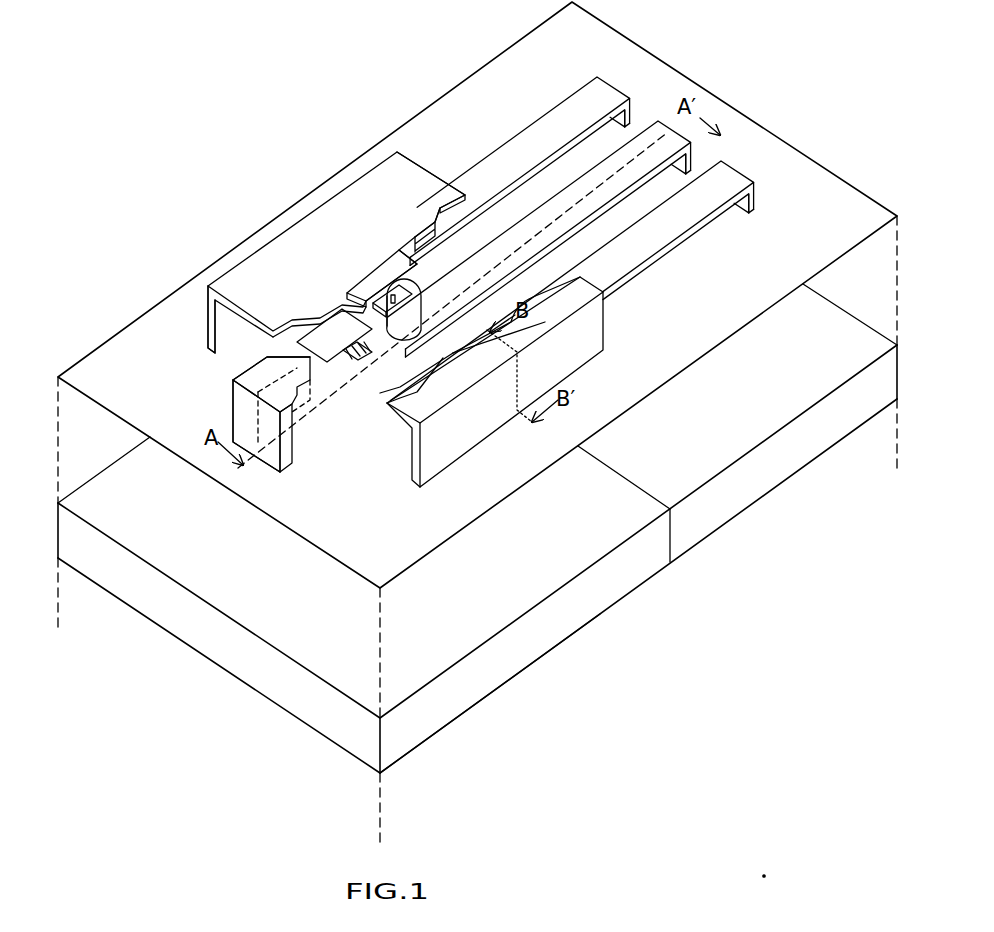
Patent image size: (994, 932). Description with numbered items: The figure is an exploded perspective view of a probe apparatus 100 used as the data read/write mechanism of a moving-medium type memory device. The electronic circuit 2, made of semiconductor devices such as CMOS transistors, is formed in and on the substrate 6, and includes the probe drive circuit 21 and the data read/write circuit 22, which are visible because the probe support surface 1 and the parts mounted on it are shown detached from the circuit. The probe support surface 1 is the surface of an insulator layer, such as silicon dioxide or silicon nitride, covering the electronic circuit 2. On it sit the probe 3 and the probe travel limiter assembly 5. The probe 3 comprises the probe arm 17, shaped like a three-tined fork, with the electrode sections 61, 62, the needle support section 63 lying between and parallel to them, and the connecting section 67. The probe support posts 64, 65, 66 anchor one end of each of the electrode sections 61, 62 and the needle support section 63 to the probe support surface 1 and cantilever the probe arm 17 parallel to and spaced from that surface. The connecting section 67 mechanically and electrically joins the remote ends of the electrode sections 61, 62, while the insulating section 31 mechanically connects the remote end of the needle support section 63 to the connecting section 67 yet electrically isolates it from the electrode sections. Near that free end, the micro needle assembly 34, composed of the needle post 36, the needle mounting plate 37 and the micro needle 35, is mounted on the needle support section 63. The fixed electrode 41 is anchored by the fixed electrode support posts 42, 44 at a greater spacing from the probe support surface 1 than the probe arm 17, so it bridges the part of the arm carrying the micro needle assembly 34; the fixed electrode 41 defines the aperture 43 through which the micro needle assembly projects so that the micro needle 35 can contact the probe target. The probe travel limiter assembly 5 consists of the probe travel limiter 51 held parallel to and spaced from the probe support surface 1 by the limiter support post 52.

The probe apparatus 100 is at (441, 80).
The probe support surface 1 is at (96, 356).
The electronic circuit 2 is at (296, 700).
The probe drive circuit 21 is at (565, 625).
The data read/write circuit 22 is at (770, 475).
The probe 3 is at (527, 110).
The probe travel limiter assembly 5 is at (243, 419).
The probe travel limiter 51 is at (250, 377).
The limiter support post 52 is at (275, 438).
The substrate 6 is at (478, 713).
The probe arm 17 is at (641, 276).
The insulating section 31 is at (348, 378).
The micro needle assembly 34 is at (374, 298).
The micro needle 35 is at (372, 298).
The needle post 36 is at (418, 325).
The needle mounting plate 37 is at (399, 300).
The fixed electrode 41 is at (253, 290).
The fixed electrode support post 42 is at (483, 414).
The aperture 43 is at (392, 255).
The fixed electrode support post 44 is at (208, 313).
The electrode section 61 is at (508, 158).
The electrode section 62 is at (647, 242).
The needle support section 63 is at (600, 187).
The probe support post 64 is at (630, 108).
The probe support post 65 is at (752, 198).
The probe support post 66 is at (693, 158).
The connecting section 67 is at (386, 430).